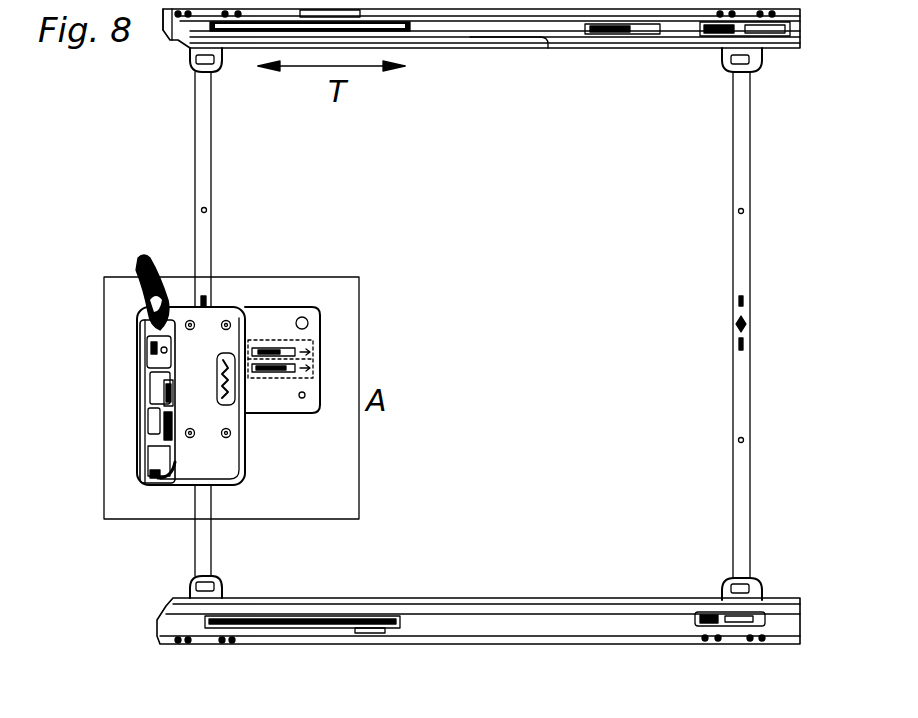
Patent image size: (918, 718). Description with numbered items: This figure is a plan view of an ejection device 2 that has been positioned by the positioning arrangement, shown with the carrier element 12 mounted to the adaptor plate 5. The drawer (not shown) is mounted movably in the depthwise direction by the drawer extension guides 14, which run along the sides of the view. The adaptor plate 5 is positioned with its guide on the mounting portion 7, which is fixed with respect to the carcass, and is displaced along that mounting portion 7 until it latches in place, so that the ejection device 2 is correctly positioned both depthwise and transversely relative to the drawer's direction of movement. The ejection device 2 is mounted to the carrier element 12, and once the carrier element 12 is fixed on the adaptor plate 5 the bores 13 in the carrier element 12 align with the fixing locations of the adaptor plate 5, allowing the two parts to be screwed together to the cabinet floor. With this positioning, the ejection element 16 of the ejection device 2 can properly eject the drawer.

The ejection device 2 is at (161, 488).
The adaptor plate 5 is at (268, 323).
The mounting portion 7 is at (203, 125).
The carrier element 12 is at (217, 457).
The bores 13 is at (232, 321).
The drawer extension guides 14 is at (594, 58).
The ejection element 16 is at (140, 262).